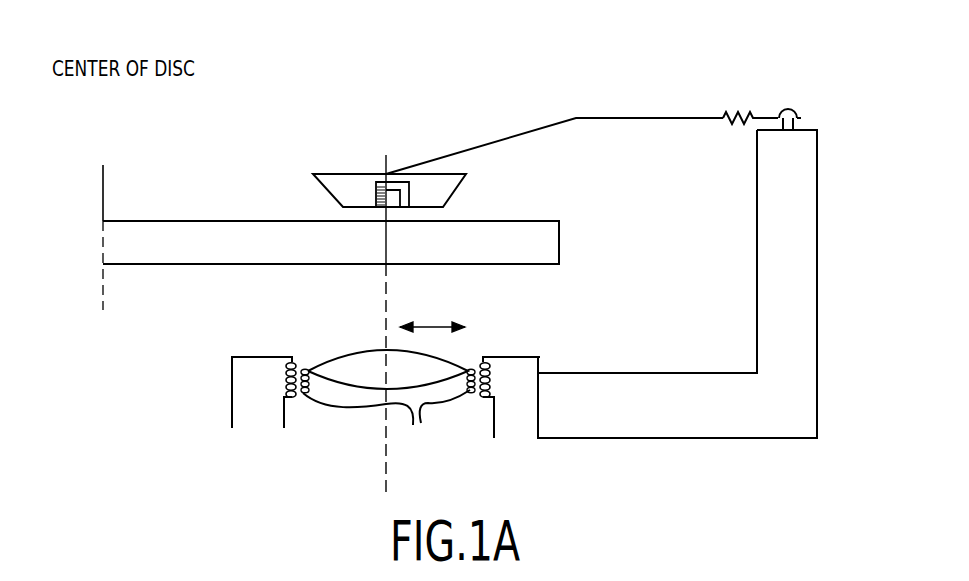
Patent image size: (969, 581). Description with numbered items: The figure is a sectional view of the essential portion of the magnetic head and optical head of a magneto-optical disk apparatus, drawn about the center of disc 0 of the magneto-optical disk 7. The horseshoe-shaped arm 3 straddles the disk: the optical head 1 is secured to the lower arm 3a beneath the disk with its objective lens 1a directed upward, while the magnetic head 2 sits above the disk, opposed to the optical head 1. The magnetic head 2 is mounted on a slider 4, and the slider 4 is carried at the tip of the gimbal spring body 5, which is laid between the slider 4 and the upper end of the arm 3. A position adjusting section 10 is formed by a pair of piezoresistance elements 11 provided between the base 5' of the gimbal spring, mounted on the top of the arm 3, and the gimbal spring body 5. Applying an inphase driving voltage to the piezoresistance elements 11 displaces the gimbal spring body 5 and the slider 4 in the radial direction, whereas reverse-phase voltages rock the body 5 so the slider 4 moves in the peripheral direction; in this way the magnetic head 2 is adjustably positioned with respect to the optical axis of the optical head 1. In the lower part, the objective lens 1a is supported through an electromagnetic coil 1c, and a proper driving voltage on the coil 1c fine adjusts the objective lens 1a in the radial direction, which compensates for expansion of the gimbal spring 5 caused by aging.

The center of disc 0 is at (103, 168).
The magneto-optical disk 7 is at (164, 234).
The slider 4 is at (342, 181).
The magnetic head 2 is at (411, 190).
The gimbal spring body 5 is at (554, 109).
The piezoresistance element 11 is at (736, 113).
The base of gimbal spring 5' is at (807, 87).
The arm 3 is at (801, 197).
The lower arm 3a is at (698, 430).
The optical head 1 is at (314, 432).
The objective lens 1a is at (358, 360).
The electromagnetic coil 1c is at (386, 424).
The position adjusting section 10 is at (765, 90).